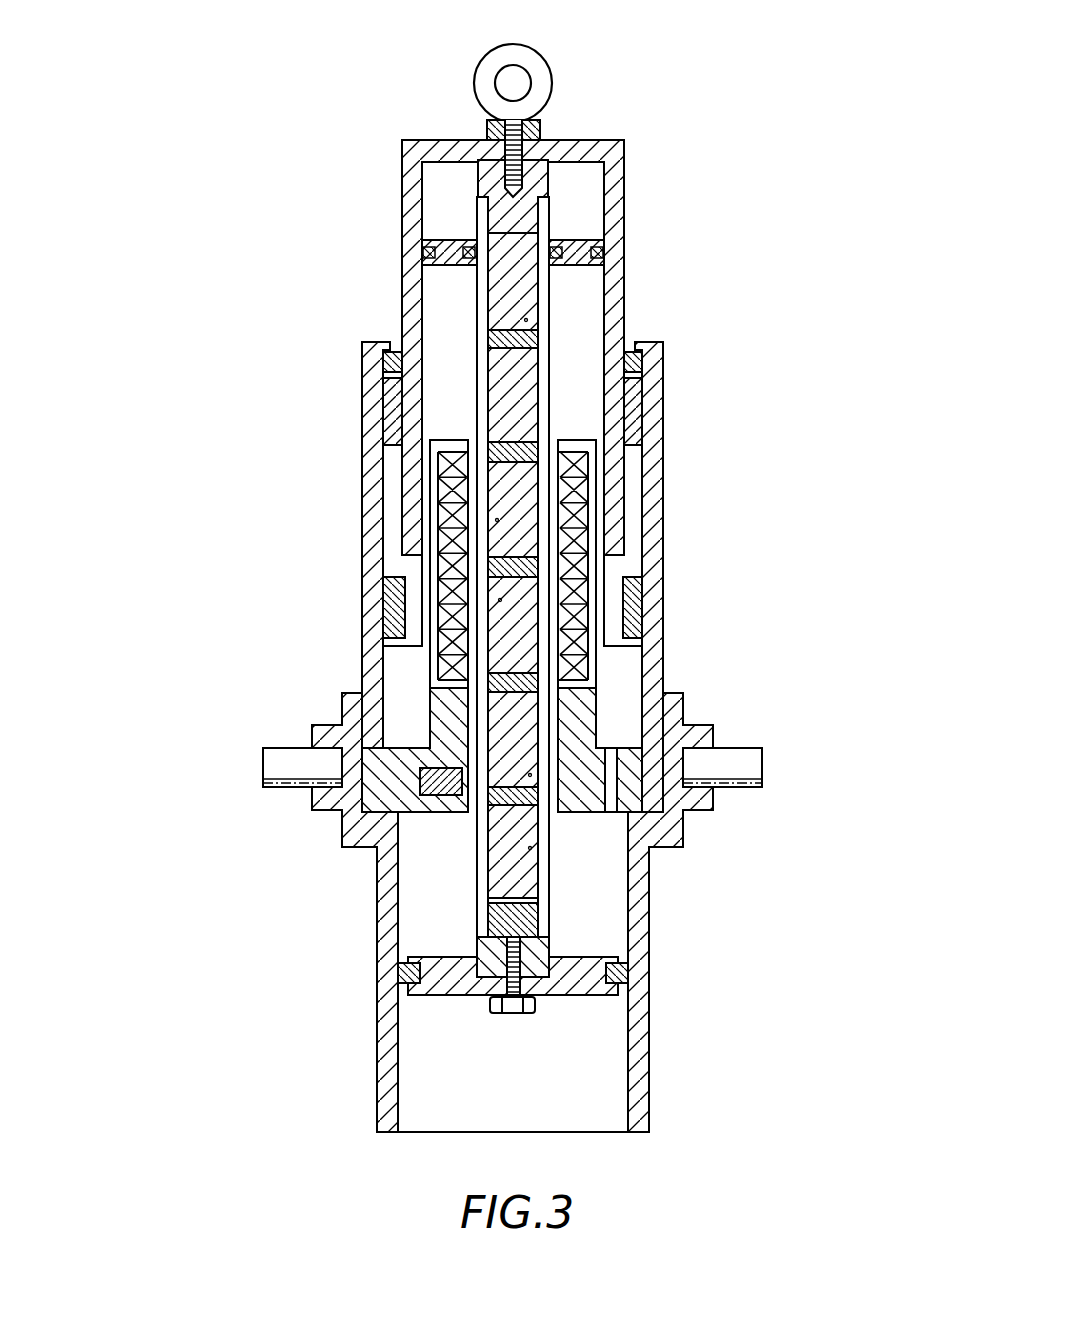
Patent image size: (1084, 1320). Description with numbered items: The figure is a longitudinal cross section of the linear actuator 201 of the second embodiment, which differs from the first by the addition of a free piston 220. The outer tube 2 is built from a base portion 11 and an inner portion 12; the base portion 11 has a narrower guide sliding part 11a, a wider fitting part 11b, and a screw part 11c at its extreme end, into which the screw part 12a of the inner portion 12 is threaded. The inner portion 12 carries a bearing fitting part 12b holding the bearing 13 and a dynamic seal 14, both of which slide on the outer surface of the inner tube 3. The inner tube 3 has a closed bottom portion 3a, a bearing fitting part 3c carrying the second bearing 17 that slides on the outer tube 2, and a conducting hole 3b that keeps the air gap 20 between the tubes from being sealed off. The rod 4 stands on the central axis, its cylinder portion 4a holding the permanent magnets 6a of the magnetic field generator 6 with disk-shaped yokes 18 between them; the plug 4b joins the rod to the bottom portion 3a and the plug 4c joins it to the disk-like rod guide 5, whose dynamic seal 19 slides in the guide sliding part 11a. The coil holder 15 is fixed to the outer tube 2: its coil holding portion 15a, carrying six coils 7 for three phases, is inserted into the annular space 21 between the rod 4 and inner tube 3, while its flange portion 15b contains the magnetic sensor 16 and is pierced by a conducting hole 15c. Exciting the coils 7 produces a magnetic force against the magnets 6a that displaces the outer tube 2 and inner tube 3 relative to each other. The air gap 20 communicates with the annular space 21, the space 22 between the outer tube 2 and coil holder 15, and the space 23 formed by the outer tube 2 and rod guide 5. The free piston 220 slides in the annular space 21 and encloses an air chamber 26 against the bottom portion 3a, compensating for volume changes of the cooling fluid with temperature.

The linear actuator 201 is at (700, 68).
The outer tube 2 is at (375, 960).
The inner tube 3 is at (628, 210).
The bottom portion 3a is at (556, 140).
The conducting hole 3b is at (615, 555).
The bearing fitting part 3c is at (603, 580).
The rod 4 is at (470, 310).
The cylinder portion 4a is at (475, 290).
The plug 4b is at (547, 177).
The plug 4c is at (487, 948).
The rod guide 5 is at (455, 990).
The magnetic field generator 6 is at (553, 375).
The permanent magnets 6a is at (526, 320).
The coils 7 is at (583, 505).
The base portion 11 is at (375, 886).
The guide sliding part 11a is at (385, 1037).
The fitting part 11b is at (350, 777).
The screw part 11c is at (372, 718).
The inner portion 12 is at (358, 490).
The screw part 12a is at (340, 742).
The bearing fitting part 12b is at (372, 407).
The bearing 13 is at (633, 402).
The dynamic seal 14 is at (641, 360).
The coil holder 15 is at (600, 702).
The coil holding portion 15a is at (395, 600).
The flange portion 15b is at (697, 747).
The conducting hole 15c is at (707, 802).
The magnetic sensor 16 is at (435, 790).
The bearing 17 is at (640, 572).
The yoke 18 is at (478, 443).
The dynamic seal 19 is at (627, 975).
The air gap 20 is at (390, 470).
The annular space 21 is at (602, 282).
The space 22 is at (655, 652).
The space 23 is at (598, 918).
The air chamber 26 is at (445, 182).
The free piston 220 is at (447, 241).